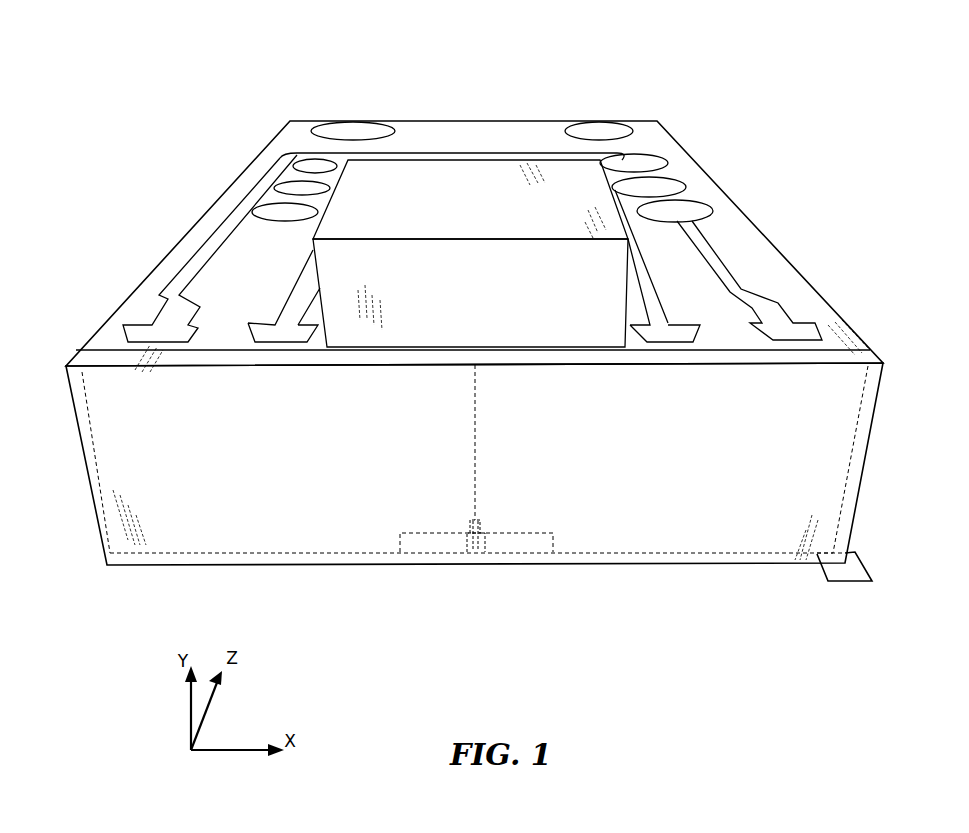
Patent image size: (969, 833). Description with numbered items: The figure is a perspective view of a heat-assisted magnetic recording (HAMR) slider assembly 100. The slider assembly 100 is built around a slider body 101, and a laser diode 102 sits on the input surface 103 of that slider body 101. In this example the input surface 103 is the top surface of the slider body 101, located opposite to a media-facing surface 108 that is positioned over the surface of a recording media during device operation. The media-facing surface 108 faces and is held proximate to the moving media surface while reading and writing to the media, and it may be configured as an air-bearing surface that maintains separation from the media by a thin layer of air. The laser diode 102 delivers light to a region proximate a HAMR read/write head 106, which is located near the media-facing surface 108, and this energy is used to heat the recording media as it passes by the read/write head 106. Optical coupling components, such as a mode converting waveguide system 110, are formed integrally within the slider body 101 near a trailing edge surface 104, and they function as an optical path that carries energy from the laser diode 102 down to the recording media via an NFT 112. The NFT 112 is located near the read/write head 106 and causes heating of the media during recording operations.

The HAMR slider assembly 100 is at (676, 60).
The slider body 101 is at (262, 152).
The laser diode 102 is at (430, 172).
The input surface 103 is at (137, 308).
The trailing edge surface 104 is at (170, 540).
The HAMR read/write head 106 is at (482, 553).
The media-facing surface 108 is at (862, 583).
The mode converting waveguide system 110 is at (475, 440).
The NFT 112 is at (477, 552).